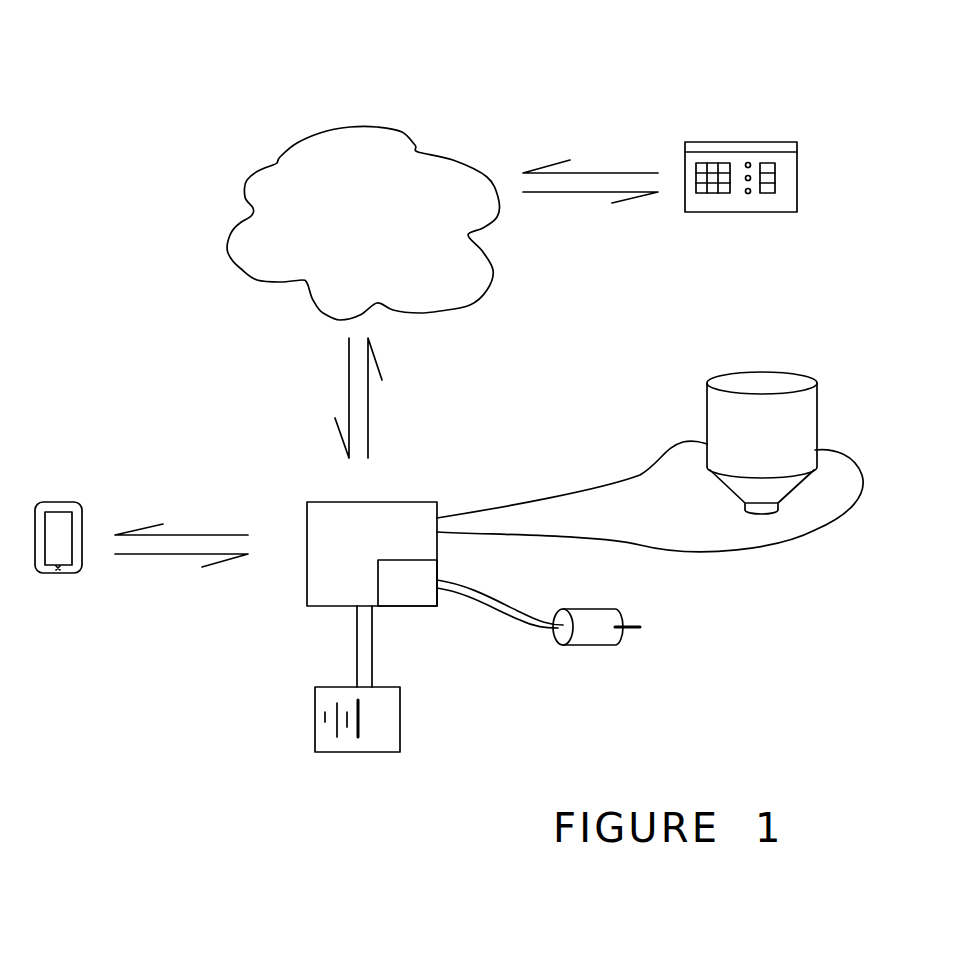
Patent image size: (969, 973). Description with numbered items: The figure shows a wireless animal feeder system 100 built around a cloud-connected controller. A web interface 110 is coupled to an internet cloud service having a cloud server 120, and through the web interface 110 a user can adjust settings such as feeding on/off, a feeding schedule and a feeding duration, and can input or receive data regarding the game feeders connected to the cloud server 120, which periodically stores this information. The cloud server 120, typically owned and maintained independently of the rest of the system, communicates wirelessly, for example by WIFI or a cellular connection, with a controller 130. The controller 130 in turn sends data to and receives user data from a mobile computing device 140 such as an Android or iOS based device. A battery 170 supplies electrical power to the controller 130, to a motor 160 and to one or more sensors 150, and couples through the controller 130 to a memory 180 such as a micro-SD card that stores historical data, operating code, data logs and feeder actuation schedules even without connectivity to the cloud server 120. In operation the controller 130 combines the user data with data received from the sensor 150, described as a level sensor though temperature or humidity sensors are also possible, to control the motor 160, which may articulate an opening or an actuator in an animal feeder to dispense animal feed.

The wireless animal feeder system 100 is at (167, 70).
The web interface 110 is at (741, 142).
The cloud server 120 is at (343, 130).
The controller 130 is at (373, 502).
The mobile computing device 140 is at (56, 502).
The sensor 150 is at (760, 372).
The motor 160 is at (588, 645).
The battery 170 is at (357, 752).
The memory 180 is at (410, 600).